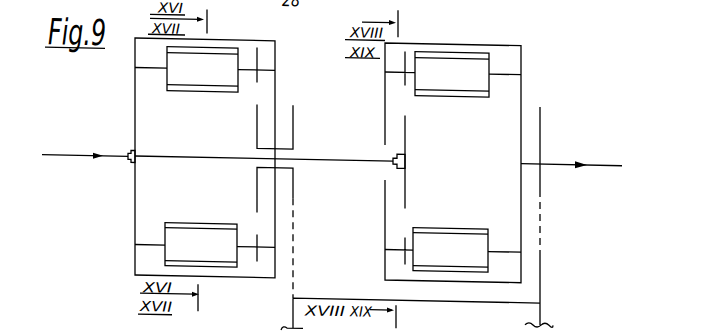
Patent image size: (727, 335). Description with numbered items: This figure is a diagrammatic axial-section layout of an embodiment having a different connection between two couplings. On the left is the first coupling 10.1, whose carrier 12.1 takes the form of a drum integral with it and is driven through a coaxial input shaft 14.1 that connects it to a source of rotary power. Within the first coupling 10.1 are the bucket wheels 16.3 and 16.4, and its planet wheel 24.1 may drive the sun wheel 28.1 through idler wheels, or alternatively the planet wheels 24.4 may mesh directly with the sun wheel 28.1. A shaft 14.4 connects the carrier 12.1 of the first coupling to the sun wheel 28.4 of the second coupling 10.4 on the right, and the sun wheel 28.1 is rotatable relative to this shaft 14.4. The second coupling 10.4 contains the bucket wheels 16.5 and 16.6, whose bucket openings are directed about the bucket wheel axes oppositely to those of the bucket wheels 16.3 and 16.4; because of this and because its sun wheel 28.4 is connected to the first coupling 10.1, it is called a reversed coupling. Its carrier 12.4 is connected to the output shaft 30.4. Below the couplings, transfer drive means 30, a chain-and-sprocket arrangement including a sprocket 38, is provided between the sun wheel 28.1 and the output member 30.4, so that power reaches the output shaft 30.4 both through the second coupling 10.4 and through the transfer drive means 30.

The first coupling 10.1 is at (127, 105).
The carrier 12.1 is at (135, 194).
The input shaft 14.1 is at (49, 157).
The bucket wheel 16.3 is at (228, 96).
The bucket wheel 16.4 is at (215, 219).
The planet wheel 24.1 is at (258, 64).
The planet wheel 24.4 is at (307, 261).
The sun wheel 28.1 is at (255, 113).
The shaft 14.4 is at (327, 154).
The sprocket 38 is at (293, 193).
The second coupling 10.4 is at (550, 60).
The carrier 12.4 is at (521, 100).
The bucket wheel 16.5 is at (486, 93).
The bucket wheel 16.6 is at (477, 218).
The sun wheel 28.4 is at (405, 174).
The transfer drive means 30 is at (465, 301).
The output shaft 30.4 is at (613, 138).